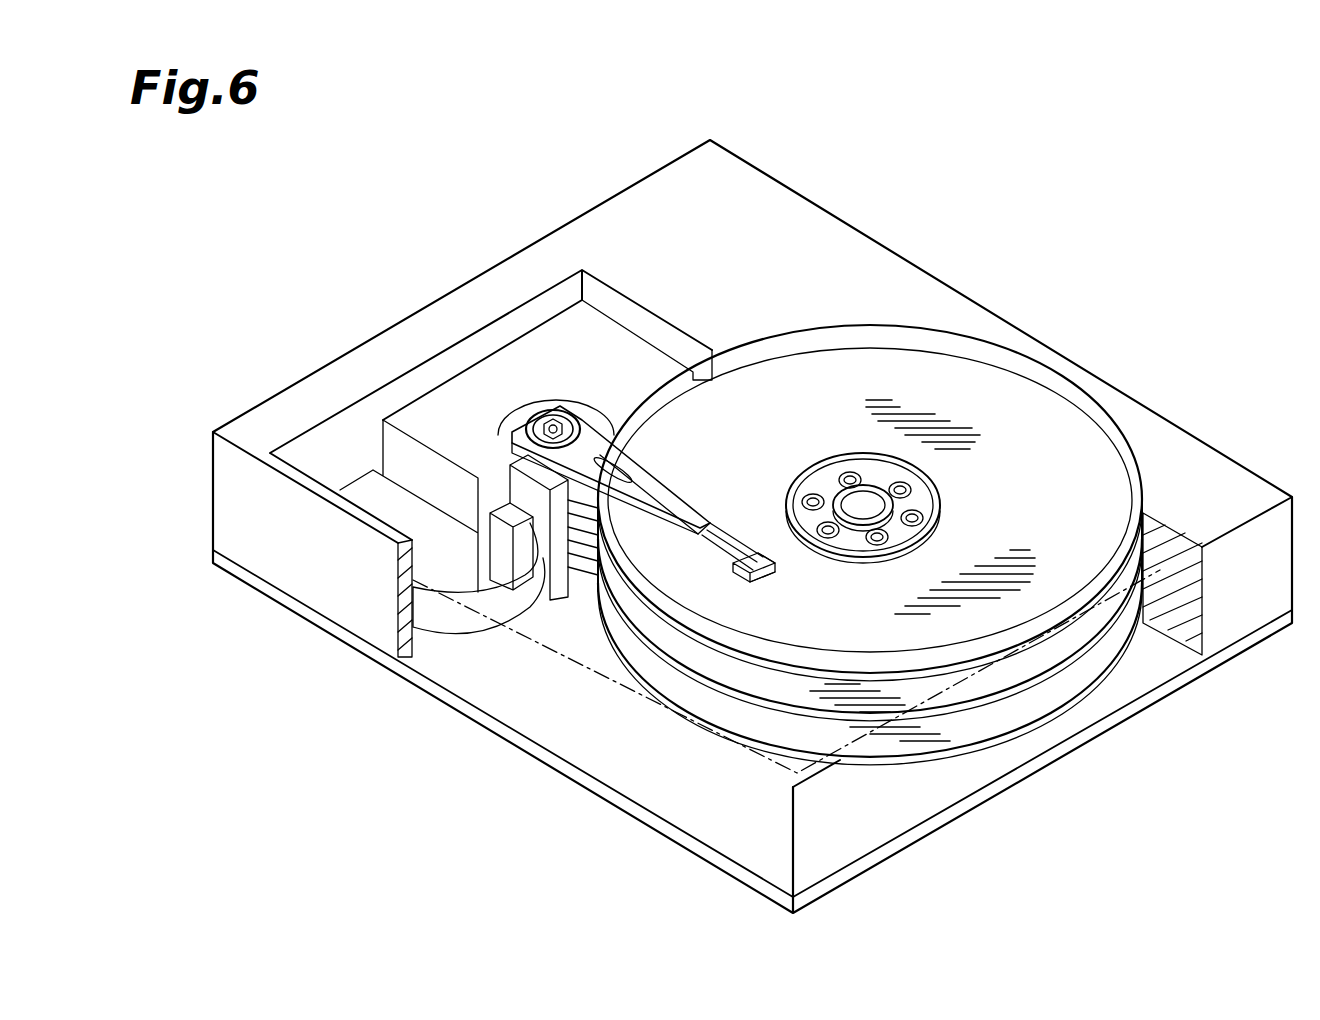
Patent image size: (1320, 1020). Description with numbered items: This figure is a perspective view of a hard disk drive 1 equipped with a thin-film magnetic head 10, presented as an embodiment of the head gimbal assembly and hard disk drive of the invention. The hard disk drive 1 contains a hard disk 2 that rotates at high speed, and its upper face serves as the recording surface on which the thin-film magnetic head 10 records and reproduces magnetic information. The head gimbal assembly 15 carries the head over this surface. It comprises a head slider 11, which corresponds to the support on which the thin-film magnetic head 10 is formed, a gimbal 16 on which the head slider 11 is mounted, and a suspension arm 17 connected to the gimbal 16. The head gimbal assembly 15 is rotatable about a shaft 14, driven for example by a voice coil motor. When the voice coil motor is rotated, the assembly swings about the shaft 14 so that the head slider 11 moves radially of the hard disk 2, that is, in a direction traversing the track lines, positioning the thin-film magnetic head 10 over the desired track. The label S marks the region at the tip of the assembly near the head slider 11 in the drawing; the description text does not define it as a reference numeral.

The hard disk drive 1 is at (993, 254).
The hard disk 2 is at (1000, 413).
The thin-film magnetic head 10 is at (760, 560).
The head slider 11 is at (741, 578).
The shaft 14 is at (560, 412).
The head gimbal assembly 15 is at (692, 493).
The gimbal 16 is at (712, 538).
The suspension arm 17 is at (652, 503).
The head slider portion S is at (773, 574).